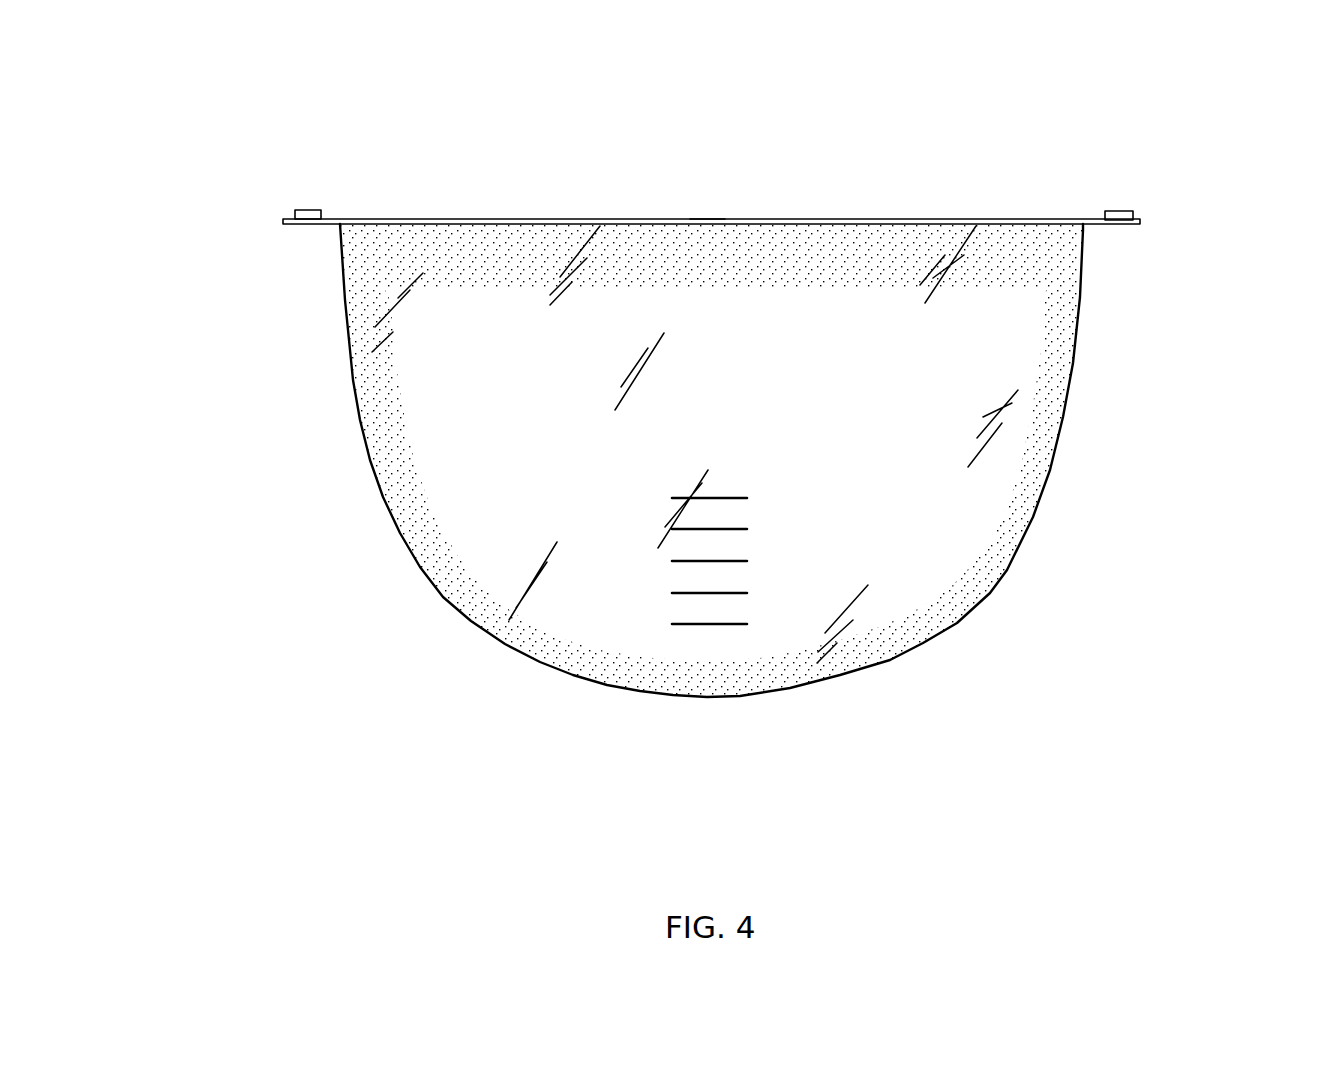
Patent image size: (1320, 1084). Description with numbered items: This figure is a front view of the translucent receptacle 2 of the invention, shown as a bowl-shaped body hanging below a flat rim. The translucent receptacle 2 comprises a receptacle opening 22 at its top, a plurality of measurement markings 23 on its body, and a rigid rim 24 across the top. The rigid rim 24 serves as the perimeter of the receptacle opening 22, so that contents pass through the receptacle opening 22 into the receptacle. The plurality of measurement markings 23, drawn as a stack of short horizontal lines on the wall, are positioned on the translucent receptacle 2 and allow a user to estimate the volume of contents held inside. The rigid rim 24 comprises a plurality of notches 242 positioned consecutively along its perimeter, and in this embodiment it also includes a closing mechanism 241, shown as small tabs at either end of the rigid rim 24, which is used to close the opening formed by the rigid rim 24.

The translucent receptacle 2 is at (240, 90).
The receptacle opening 22 is at (677, 192).
The plurality of measurement markings 23 is at (672, 561).
The rigid rim 24 is at (1082, 220).
The closing mechanism 241 is at (298, 216).
The plurality of notches 242 is at (706, 220).